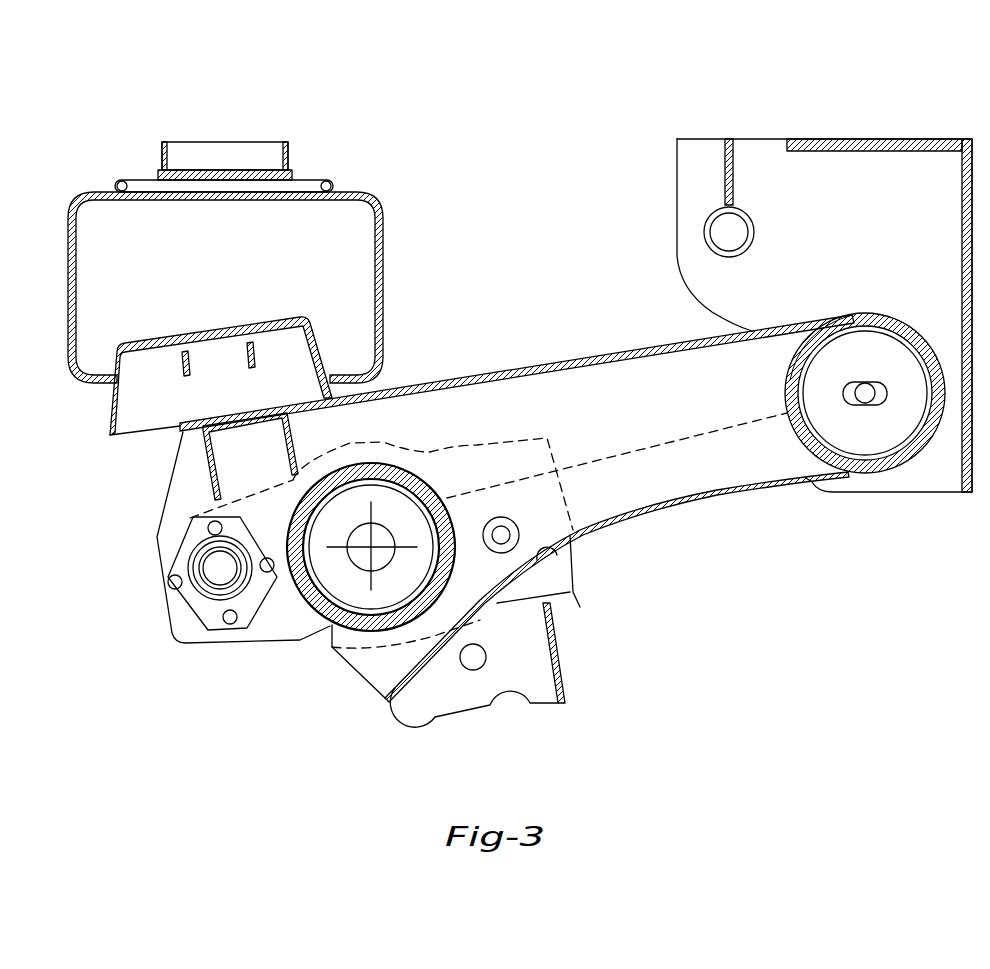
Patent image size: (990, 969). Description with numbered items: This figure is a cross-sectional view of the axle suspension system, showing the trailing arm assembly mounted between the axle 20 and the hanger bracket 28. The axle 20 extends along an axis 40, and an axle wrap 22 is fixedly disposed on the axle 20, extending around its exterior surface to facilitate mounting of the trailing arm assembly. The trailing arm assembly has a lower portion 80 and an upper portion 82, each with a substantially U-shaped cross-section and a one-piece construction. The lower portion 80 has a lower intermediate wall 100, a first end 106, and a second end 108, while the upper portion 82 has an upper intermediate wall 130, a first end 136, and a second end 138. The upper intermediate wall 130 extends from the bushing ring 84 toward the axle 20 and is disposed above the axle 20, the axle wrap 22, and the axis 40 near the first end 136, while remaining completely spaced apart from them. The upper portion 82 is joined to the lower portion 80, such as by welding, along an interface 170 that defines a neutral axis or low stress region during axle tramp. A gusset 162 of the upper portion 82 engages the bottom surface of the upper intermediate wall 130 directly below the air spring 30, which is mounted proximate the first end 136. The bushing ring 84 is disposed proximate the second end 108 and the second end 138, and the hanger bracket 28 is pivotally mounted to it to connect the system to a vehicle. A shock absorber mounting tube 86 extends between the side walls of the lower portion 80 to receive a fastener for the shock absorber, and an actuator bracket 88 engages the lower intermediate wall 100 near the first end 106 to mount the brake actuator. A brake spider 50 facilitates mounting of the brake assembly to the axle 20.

The axle 20 is at (427, 498).
The axle wrap 22 is at (312, 612).
The hanger bracket 28 is at (905, 139).
The air spring 30 is at (235, 263).
The axis 40 is at (380, 563).
The brake spider 50 is at (572, 592).
The lower portion 80 is at (762, 492).
The upper portion 82 is at (468, 388).
The bushing ring 84 is at (905, 316).
The shock absorber mounting tube 86 is at (520, 535).
The actuator bracket 88 is at (455, 700).
The lower intermediate wall 100 is at (643, 510).
The first end 106 is at (163, 585).
The second end 108 is at (868, 478).
The upper intermediate wall 130 is at (596, 355).
The first end 136 is at (180, 430).
The second end 138 is at (848, 312).
The gusset 162 is at (218, 483).
The interface 170 is at (720, 427).